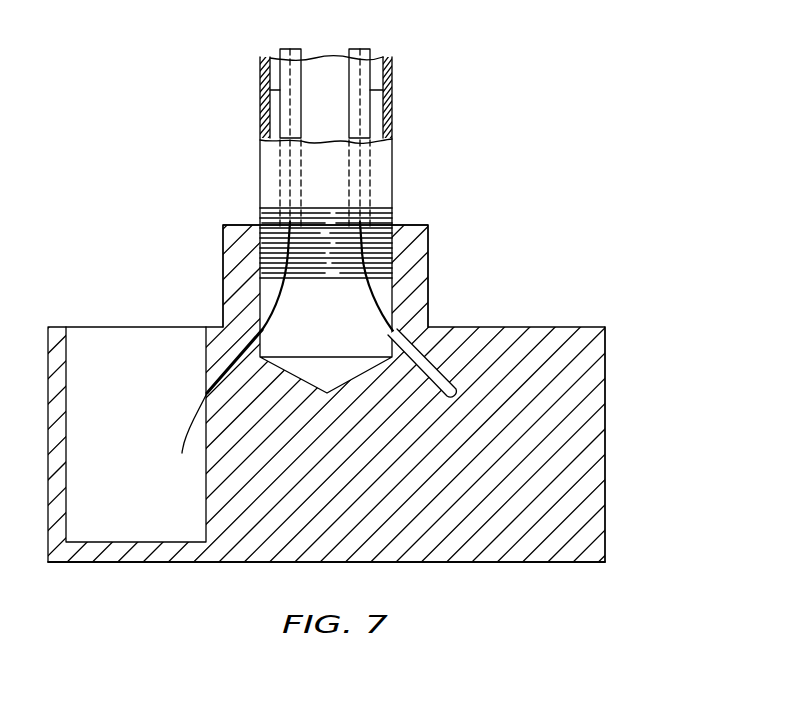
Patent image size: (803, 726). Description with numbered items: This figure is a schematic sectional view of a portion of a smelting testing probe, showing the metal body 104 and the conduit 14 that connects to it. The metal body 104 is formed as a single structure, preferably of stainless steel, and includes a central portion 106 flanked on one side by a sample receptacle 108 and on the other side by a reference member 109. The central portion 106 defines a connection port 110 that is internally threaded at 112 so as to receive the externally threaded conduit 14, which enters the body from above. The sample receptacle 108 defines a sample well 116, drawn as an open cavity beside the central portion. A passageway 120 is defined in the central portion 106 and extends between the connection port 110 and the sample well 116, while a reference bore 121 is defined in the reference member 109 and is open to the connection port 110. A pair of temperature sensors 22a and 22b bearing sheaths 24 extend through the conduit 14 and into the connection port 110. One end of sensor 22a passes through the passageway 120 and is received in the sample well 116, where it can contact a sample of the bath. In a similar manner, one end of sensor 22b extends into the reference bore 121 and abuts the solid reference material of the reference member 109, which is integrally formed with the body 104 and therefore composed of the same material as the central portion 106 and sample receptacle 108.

The conduit 14 is at (392, 70).
The temperature sensor 22a is at (290, 49).
The temperature sensor 22b is at (358, 49).
The sheaths 24 is at (280, 90).
The metal body 104 is at (606, 327).
The central portion 106 is at (521, 563).
The sample receptacle 108 is at (420, 236).
The reference member 109 is at (605, 404).
The connection port 110 is at (310, 305).
The internal threads 112 is at (272, 228).
The sample well 116 is at (97, 345).
The passageway 120 is at (216, 372).
The reference bore 121 is at (438, 367).